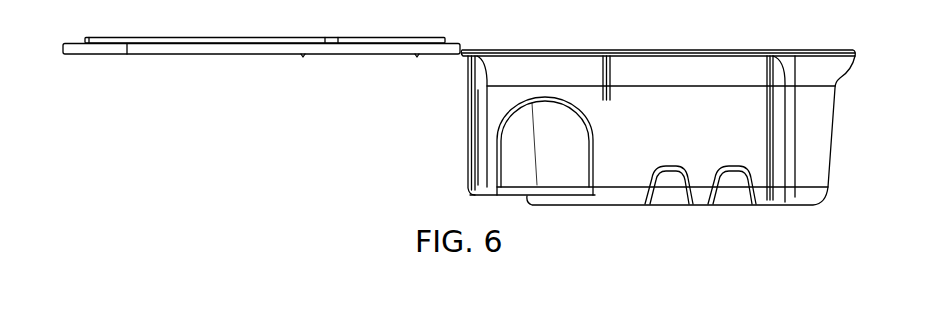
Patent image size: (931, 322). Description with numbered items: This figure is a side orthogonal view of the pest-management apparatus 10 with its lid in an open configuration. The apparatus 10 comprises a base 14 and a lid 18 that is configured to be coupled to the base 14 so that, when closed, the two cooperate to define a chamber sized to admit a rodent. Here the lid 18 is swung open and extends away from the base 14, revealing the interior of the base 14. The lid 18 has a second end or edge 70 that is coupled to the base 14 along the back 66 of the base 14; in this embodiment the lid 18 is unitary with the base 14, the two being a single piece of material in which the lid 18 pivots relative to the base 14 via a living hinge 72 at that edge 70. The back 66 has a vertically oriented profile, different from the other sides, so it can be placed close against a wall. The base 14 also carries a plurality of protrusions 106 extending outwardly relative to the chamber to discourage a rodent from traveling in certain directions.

The pest-management apparatus 10 is at (288, 192).
The base 14 is at (817, 140).
The lid 18 is at (250, 55).
The back 66 is at (468, 111).
The second end or edge 70 is at (462, 49).
The living hinge 72 is at (463, 57).
The protrusions 106 is at (478, 167).